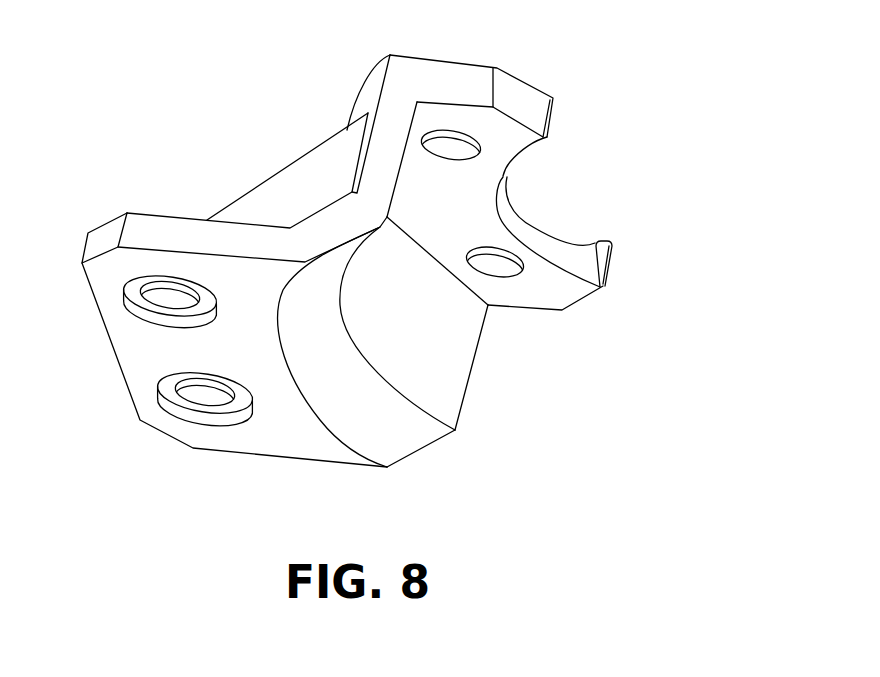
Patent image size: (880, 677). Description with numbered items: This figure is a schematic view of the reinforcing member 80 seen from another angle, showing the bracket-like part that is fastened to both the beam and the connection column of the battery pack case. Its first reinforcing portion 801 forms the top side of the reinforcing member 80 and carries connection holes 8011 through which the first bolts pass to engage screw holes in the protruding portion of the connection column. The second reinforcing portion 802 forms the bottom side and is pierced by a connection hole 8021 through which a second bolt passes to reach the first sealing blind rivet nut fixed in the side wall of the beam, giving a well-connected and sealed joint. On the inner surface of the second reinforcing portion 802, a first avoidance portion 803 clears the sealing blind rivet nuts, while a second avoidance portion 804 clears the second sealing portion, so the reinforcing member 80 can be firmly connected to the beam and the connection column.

The reinforcing member 80 is at (363, 244).
The first reinforcing portion 801 is at (420, 166).
The connection hole 8011 is at (500, 267).
The second reinforcing portion 802 is at (102, 238).
The connection hole 8021 is at (160, 292).
The first avoidance portion 803 is at (146, 284).
The second avoidance portion 804 is at (385, 410).